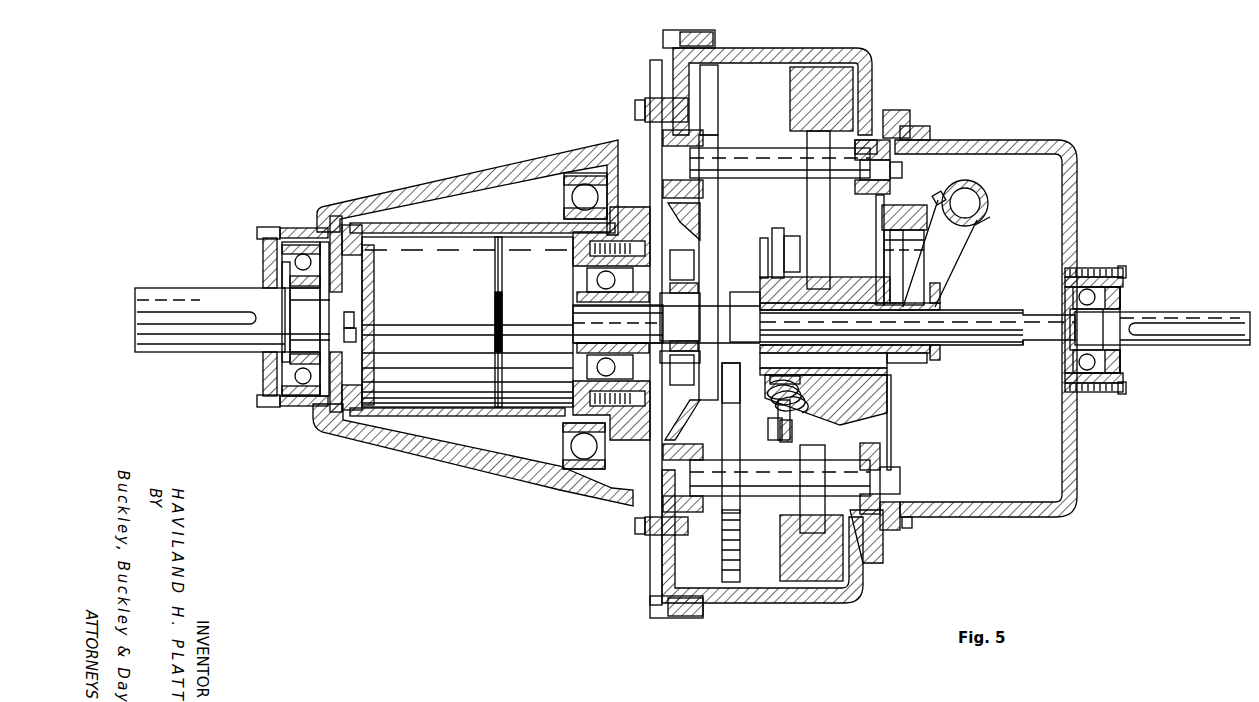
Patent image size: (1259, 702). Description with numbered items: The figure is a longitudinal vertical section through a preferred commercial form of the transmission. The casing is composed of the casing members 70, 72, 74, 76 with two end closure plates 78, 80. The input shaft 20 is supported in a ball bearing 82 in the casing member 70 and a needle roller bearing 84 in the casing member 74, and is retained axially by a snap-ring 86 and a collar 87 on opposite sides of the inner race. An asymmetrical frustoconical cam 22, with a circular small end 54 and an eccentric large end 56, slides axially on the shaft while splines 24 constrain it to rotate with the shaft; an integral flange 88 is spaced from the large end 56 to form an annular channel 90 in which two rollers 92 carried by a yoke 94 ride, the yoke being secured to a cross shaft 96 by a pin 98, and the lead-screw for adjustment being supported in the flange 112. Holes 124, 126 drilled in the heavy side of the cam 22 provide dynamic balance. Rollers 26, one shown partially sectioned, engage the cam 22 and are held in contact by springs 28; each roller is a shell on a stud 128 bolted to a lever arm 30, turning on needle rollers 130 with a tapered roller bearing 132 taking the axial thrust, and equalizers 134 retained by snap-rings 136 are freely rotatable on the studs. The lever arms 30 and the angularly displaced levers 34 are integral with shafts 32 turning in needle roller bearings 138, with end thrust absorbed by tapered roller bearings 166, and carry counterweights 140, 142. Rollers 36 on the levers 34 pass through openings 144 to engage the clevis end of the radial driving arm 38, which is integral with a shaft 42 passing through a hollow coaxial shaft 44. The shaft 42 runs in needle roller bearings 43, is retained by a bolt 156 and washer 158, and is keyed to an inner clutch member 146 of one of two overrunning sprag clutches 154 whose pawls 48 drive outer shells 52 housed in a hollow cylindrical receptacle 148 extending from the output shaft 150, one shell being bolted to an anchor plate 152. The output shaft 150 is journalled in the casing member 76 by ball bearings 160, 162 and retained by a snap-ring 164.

The input shaft 20 is at (1180, 314).
The asymmetrical frustoconical cam 22 is at (784, 392).
The splines 24 is at (988, 310).
The rollers 26 is at (890, 225).
The springs 28 is at (798, 416).
The lever arms 30 is at (818, 160).
The shafts 32 is at (754, 154).
The levers 34 is at (714, 152).
The rollers 36 is at (670, 262).
The radial driving arm 38 is at (700, 380).
The shaft 42 is at (590, 322).
The needle roller bearings 43 is at (690, 360).
The hollow coaxial shaft 44 is at (655, 321).
The pawl 48 is at (586, 370).
The ratchet cylinder 52 is at (486, 245).
The small end 54 is at (762, 258).
The large end 56 is at (896, 414).
The casing member 70 is at (992, 142).
The casing member 72 is at (783, 50).
The casing member 74 is at (676, 76).
The casing member 76 is at (440, 194).
The end closure plate 78 is at (1105, 266).
The end closure plate 80 is at (278, 228).
The anti-friction bearing 82 is at (1110, 296).
The anti-friction bearing 84 is at (734, 292).
The snap-ring 86 is at (1100, 312).
The collar 87 is at (1067, 348).
The integral flange 88 is at (942, 304).
The annular channel 90 is at (925, 356).
The rollers 92 is at (914, 288).
The yoke 94 is at (963, 248).
The cross shaft 96 is at (979, 191).
The pin 98 is at (992, 218).
The flange 112 is at (895, 538).
The hole 124 is at (918, 367).
The hole 126 is at (887, 385).
The stud 128 is at (905, 254).
The needle rollers 130 is at (910, 238).
The tapered roller bearing 132 is at (886, 223).
The equalizers 134 is at (773, 248).
The snap-rings 136 is at (770, 214).
The needle roller bearings 138 is at (662, 141).
The counterweight 140 is at (792, 100).
The counterweight 142 is at (714, 82).
The openings 144 is at (700, 226).
The inner clutch members 146 is at (361, 296).
The hollow cylindrical receptacle 148 is at (390, 226).
The output shaft 150 is at (211, 292).
The anchor plate 152 is at (644, 438).
The overrunning sprag clutches 154 is at (467, 322).
The bolt 156 is at (358, 318).
The washer 158 is at (362, 334).
The ball bearing 160 is at (305, 228).
The ball bearing 162 is at (582, 178).
The snap-ring 164 is at (284, 270).
The tapered roller bearings 166 is at (880, 120).